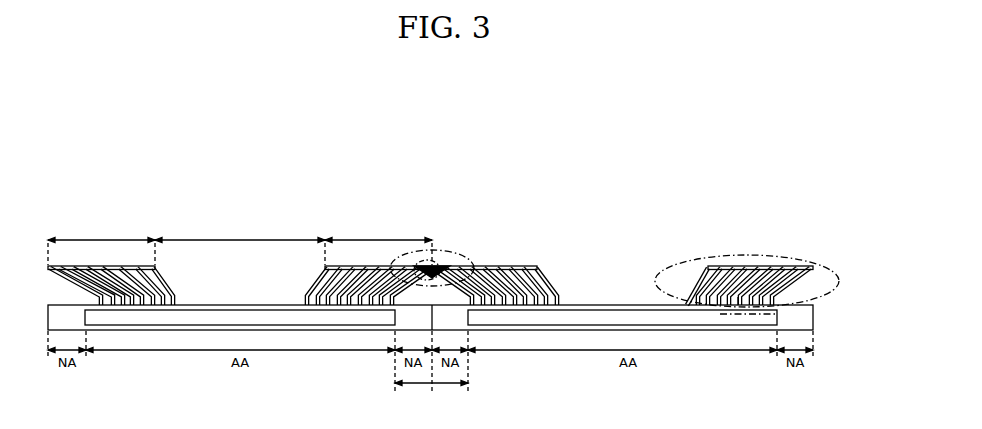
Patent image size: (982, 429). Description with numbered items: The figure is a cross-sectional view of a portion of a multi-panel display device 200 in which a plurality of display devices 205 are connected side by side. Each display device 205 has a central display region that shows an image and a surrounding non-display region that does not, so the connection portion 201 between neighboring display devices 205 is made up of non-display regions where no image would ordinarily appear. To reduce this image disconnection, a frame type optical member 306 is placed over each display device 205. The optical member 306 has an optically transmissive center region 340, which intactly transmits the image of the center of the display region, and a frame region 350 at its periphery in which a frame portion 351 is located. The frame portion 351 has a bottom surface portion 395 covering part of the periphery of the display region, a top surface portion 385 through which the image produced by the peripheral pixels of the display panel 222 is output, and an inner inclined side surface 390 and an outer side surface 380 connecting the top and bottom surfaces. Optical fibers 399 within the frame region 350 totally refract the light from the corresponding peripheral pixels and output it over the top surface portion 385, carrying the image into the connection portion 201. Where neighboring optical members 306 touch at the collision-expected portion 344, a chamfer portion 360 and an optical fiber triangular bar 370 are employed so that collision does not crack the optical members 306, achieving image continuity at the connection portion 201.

The multi-panel display device 200 is at (656, 141).
The connection portion 201 is at (431, 366).
The display device 205 is at (553, 330).
The display panel 222 is at (678, 326).
The frame type optical member 306 is at (795, 242).
The center region 340 is at (240, 233).
The collision-expected portion 344 is at (402, 250).
The frame region 350 is at (240, 244).
The frame portion 351 is at (824, 266).
The chamfer portion 360 is at (415, 262).
The optical fiber triangular bar 370 is at (437, 265).
The outer side surface 380 is at (447, 290).
The top surface portion 385 is at (755, 264).
The inner inclined side surface 390 is at (690, 278).
The bottom surface portion 395 is at (738, 297).
The optical fibers 399 is at (708, 308).